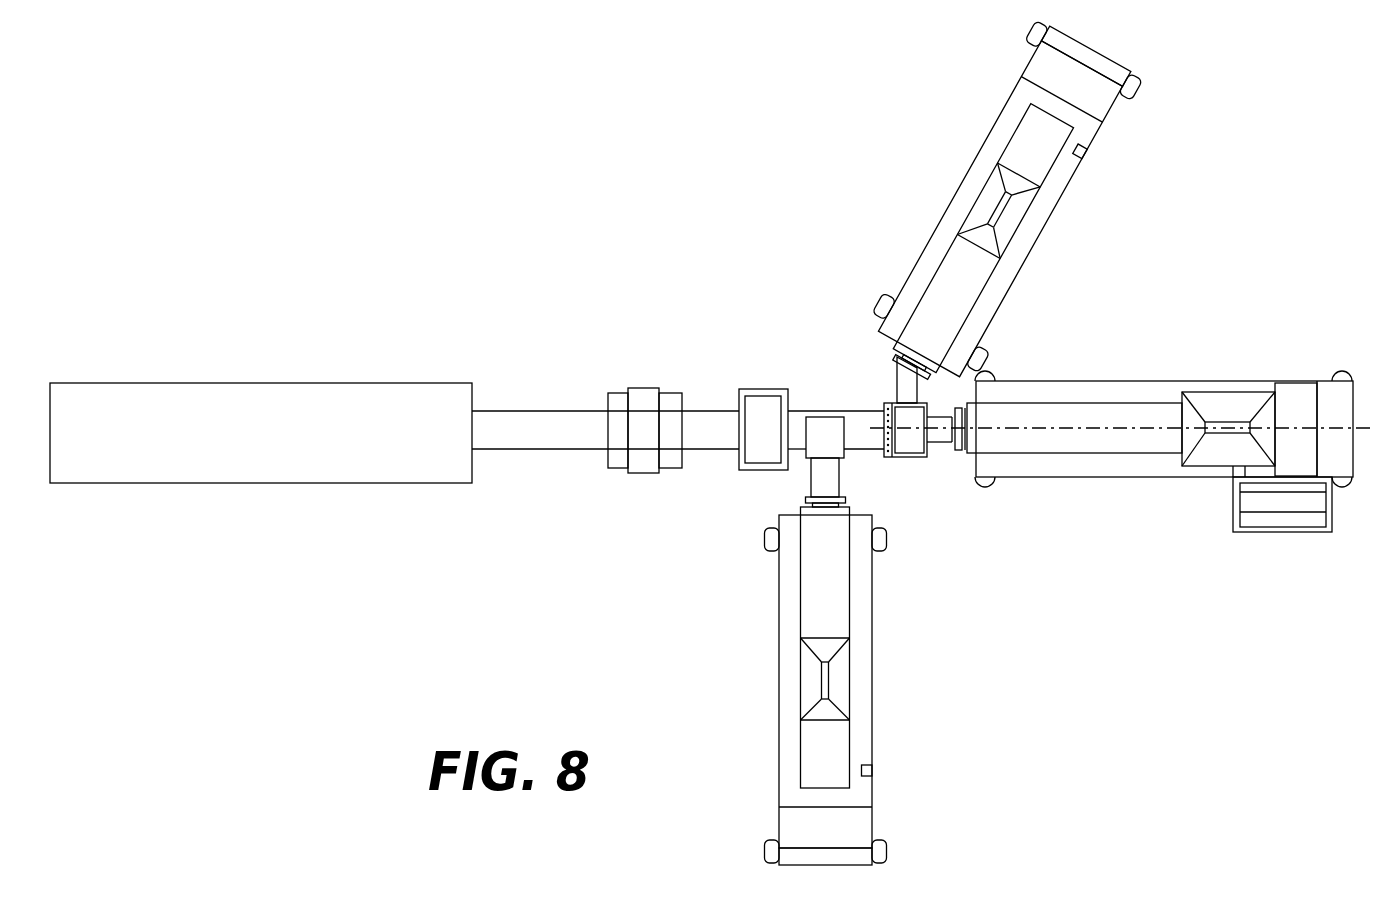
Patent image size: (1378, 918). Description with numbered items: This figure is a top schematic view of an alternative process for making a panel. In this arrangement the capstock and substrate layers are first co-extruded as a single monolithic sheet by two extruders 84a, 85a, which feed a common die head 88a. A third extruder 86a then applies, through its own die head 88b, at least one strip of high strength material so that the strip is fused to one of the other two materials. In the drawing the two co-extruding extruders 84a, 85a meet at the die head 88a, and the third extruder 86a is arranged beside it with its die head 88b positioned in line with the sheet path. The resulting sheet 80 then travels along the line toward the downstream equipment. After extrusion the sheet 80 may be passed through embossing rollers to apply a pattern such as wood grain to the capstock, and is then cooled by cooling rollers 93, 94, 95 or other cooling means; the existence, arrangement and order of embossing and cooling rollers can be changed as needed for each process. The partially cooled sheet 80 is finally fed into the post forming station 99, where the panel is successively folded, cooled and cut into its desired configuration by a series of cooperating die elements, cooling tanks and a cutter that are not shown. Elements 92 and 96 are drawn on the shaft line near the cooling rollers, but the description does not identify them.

The post forming station 99 is at (361, 392).
The sheet 80 is at (542, 423).
The cooling roller 95 is at (615, 398).
The cooling roller 94 is at (668, 398).
The coupling body 96 is at (638, 467).
The bearing 92 is at (757, 403).
The cooling roller 93 is at (750, 468).
The die head 88b is at (827, 423).
The die head 88a is at (905, 443).
The extruder 84a is at (1063, 180).
The extruder 85a is at (1120, 387).
The third extruder 86a is at (862, 612).